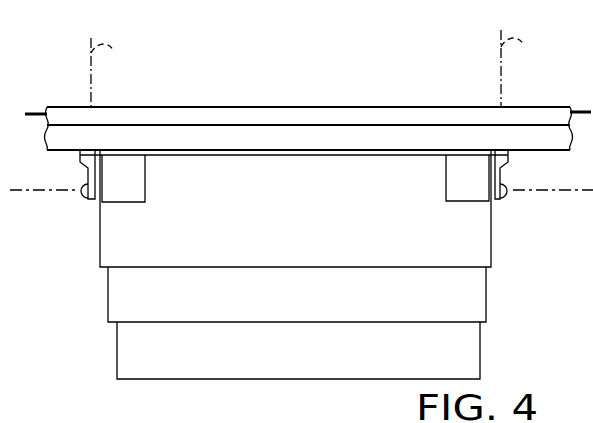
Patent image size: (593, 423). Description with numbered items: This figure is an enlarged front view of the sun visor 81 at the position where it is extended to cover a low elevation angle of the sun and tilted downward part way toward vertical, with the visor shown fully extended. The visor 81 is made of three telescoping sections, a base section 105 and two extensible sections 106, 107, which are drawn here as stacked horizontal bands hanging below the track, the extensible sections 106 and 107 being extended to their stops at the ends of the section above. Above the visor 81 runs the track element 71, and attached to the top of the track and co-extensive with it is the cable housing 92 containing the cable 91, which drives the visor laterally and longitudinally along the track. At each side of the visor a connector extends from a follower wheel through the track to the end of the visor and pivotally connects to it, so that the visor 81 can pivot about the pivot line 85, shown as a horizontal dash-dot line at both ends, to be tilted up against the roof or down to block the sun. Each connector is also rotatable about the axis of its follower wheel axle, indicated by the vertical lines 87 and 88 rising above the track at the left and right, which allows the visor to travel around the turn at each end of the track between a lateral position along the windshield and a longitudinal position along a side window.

The plate 71 is at (277, 131).
The visor 81 is at (500, 262).
The pivot line 85 is at (45, 181).
The line 87 is at (110, 72).
The line 88 is at (520, 68).
The cable 91 is at (39, 110).
The cable housing 92 is at (506, 106).
The base section 105 is at (100, 241).
The extensible section 106 is at (108, 307).
The extensible section 107 is at (117, 338).